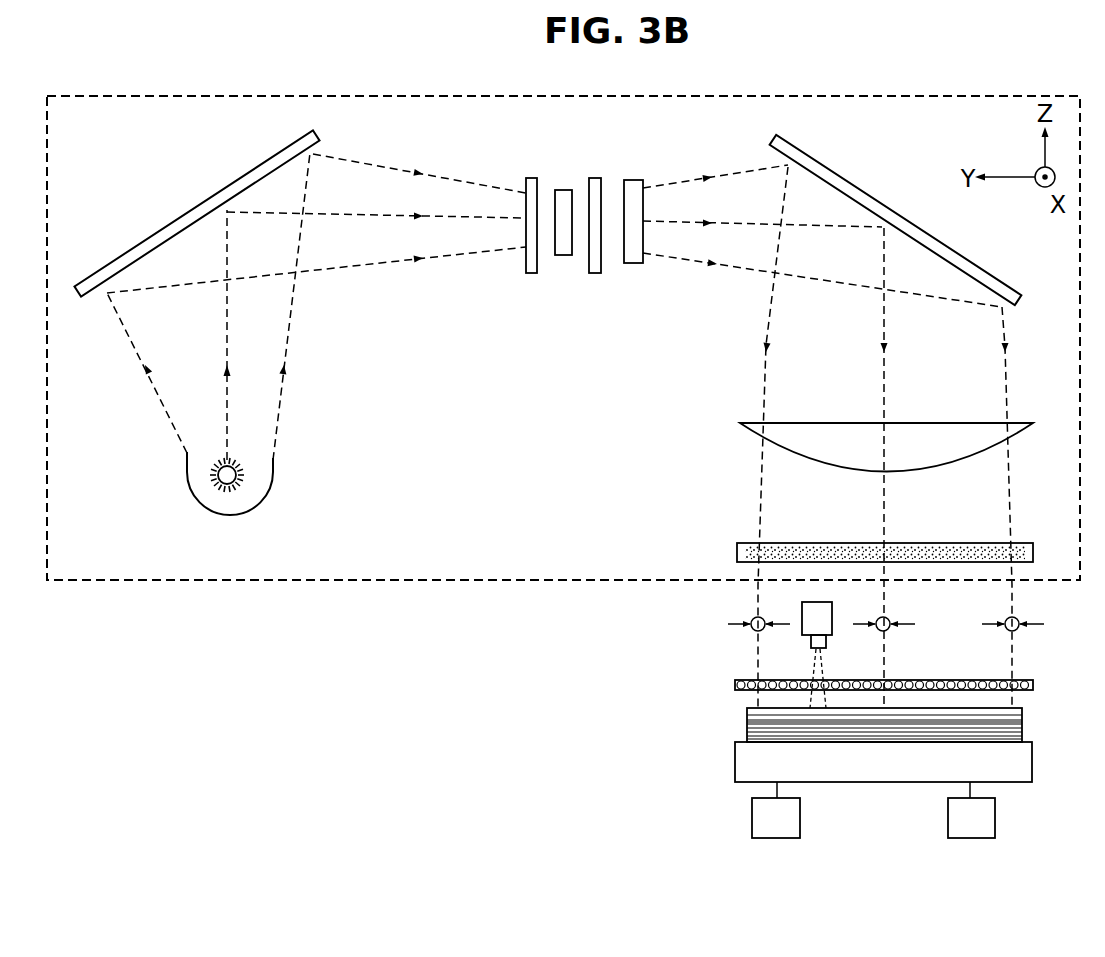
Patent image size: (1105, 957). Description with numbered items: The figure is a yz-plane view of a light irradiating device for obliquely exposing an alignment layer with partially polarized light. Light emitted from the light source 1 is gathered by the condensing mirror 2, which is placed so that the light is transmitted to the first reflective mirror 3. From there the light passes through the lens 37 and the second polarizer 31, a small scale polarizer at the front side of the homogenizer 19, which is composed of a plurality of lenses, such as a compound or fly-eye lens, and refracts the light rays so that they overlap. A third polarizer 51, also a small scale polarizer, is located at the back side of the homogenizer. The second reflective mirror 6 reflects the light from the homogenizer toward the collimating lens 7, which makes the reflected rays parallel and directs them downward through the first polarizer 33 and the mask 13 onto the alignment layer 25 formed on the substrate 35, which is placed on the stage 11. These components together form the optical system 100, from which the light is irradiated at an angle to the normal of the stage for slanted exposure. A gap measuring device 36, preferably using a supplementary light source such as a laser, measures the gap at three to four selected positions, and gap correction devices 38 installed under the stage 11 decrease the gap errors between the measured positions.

The light source 1 is at (240, 461).
The condensing mirror 2 is at (273, 490).
The first reflective mirror 3 is at (192, 222).
The second reflective mirror 6 is at (893, 217).
The collimating lens 7 is at (754, 424).
The stage 11 is at (745, 760).
The mask 13 is at (736, 680).
The homogenizer 19 is at (596, 180).
The alignment layer 25 is at (747, 708).
The second polarizer 31 is at (565, 256).
The first polarizer 33 is at (745, 545).
The substrate 35 is at (747, 731).
The gap measuring device 36 is at (802, 606).
The lens 37 is at (534, 180).
The gap correction devices 38 is at (775, 840).
The third polarizer 51 is at (634, 262).
The optical system 100 is at (325, 582).